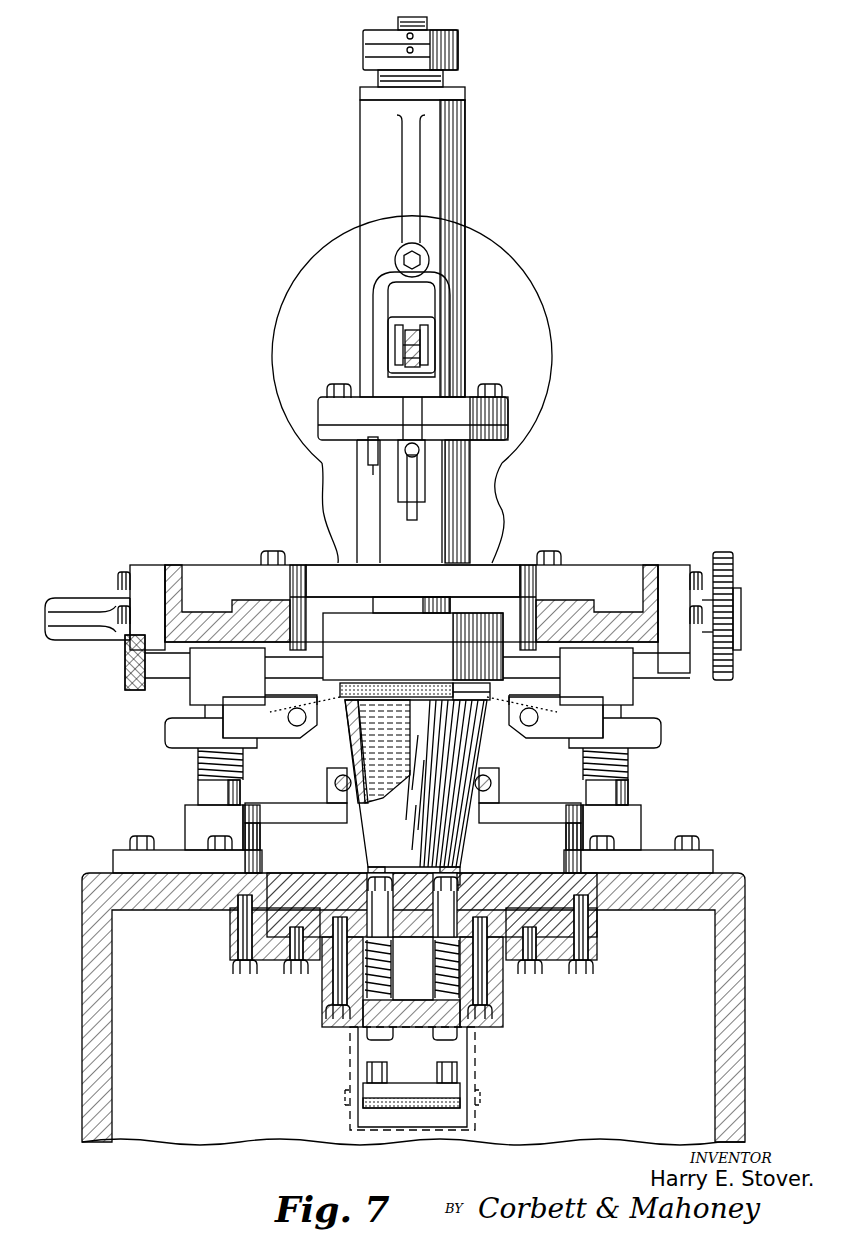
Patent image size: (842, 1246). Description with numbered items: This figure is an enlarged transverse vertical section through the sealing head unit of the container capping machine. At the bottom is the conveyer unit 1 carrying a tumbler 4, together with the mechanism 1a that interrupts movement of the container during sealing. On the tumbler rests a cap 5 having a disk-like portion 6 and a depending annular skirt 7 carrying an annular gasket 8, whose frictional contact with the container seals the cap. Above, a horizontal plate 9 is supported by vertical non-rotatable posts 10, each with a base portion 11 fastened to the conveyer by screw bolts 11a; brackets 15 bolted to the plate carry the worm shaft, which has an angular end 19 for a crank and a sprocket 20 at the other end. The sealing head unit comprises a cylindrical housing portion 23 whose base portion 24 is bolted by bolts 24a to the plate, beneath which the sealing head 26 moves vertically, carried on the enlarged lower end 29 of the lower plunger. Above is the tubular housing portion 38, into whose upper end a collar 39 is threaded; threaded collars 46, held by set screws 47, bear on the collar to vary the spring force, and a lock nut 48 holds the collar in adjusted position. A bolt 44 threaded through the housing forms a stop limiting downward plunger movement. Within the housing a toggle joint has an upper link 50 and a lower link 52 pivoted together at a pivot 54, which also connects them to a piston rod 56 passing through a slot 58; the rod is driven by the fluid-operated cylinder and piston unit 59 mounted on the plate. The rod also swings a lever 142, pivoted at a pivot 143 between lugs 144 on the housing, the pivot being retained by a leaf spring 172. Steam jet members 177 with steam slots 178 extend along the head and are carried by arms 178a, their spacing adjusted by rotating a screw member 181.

The conveyer unit 1 is at (370, 880).
The container stopping mechanism 1a is at (432, 944).
The tumbler 4 is at (445, 841).
The cap 5 is at (434, 690).
The disk-like portion 6 is at (399, 692).
The annular skirt 7 is at (344, 692).
The annular gasket 8 is at (372, 692).
The plate 9 is at (207, 612).
The posts 10 is at (198, 768).
The base portion 11 is at (200, 813).
The screw bolts 11a is at (210, 838).
The bracket 15 is at (142, 588).
The angular end 19 is at (72, 604).
The sprocket 20 is at (718, 580).
The cylindrical housing portion 23 is at (452, 505).
The base portion 24 is at (505, 575).
The bolts 24a is at (552, 560).
The sealing head 26 is at (352, 626).
The enlarged lower end 29 is at (392, 606).
The housing portion 38 is at (440, 160).
The collar 39 is at (440, 78).
The bolt 44 is at (430, 259).
The threaded collars 46 is at (380, 48).
The set screws 47 is at (407, 33).
The lock nut 48 is at (432, 92).
The toggle link 50 is at (430, 333).
The toggle link 52 is at (418, 352).
The pivot 54 is at (395, 352).
The piston rod 56 is at (405, 338).
The vertical slot 58 is at (418, 326).
The fluid-operated cylinder and piston unit 59 is at (527, 307).
The lever 142 is at (408, 512).
The pivot 143 is at (368, 443).
The lugs 144 is at (390, 462).
The leaf spring 172 is at (410, 481).
The steam jet members 177 is at (271, 718).
The steam slots 178 is at (305, 727).
The arms 178a is at (200, 728).
The screw member 181 is at (125, 661).